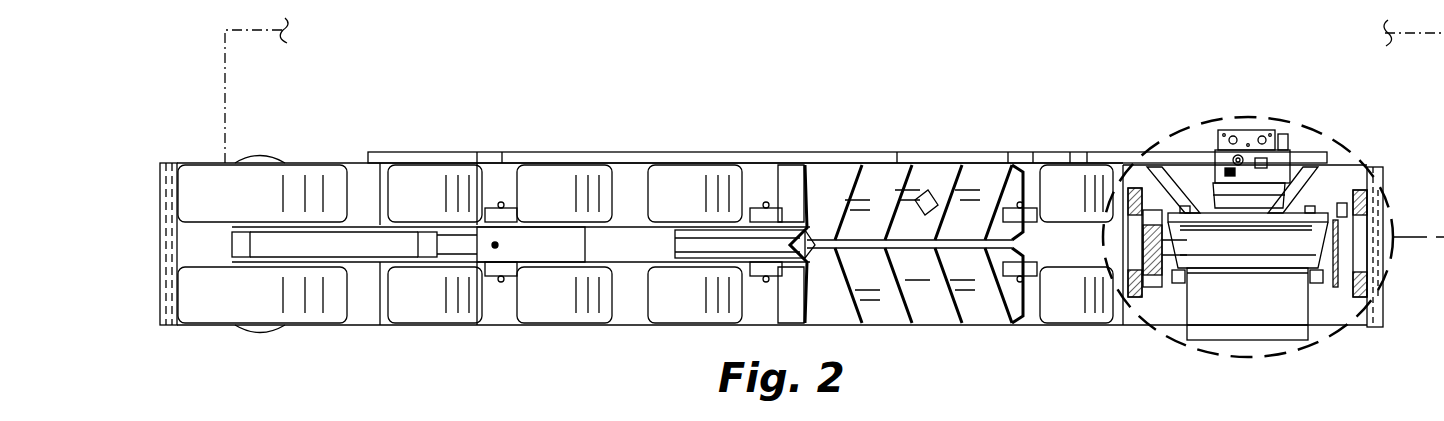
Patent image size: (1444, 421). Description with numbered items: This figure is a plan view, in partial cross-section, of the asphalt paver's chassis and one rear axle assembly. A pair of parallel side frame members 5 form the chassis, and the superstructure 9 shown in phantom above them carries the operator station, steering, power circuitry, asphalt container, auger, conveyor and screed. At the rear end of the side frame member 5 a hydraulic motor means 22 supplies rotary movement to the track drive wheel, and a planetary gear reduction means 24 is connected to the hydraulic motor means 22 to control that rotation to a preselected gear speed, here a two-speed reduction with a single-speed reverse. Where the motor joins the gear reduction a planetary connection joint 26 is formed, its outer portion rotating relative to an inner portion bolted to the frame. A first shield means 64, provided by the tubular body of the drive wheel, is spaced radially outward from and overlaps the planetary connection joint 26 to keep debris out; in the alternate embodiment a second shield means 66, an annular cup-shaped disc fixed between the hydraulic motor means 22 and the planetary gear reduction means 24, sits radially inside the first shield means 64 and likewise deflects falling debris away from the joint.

The superstructure 9 is at (312, 82).
The side frame member 5 is at (1003, 152).
The hydraulic motor means 22 is at (1250, 134).
The second shield means 66 is at (1200, 217).
The first shield means 64 is at (1336, 215).
The planetary gear reduction means 24 is at (1205, 327).
The planetary connection joint 26 is at (1290, 236).